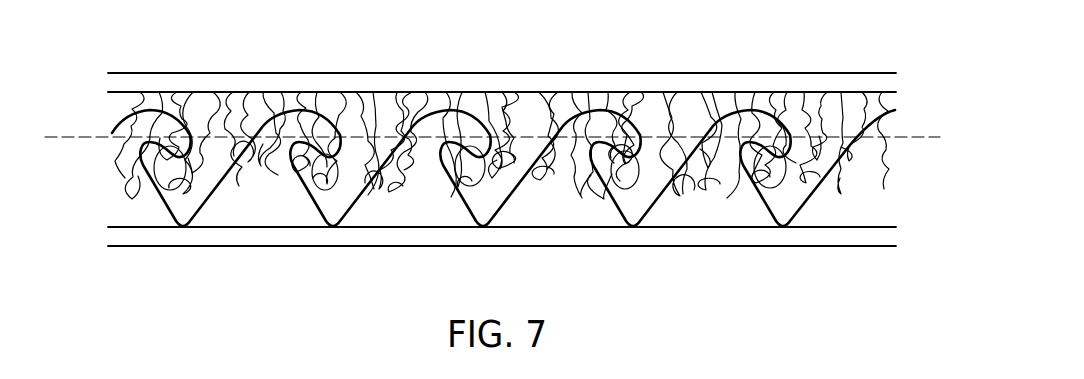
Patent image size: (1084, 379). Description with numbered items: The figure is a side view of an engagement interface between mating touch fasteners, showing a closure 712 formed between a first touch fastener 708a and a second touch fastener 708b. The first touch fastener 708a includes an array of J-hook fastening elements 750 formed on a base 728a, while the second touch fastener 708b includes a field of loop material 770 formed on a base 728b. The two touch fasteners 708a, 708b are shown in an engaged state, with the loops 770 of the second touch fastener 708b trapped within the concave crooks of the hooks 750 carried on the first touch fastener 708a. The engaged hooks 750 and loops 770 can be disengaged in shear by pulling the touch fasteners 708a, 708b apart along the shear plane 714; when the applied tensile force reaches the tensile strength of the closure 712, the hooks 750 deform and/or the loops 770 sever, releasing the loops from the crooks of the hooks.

The closure 712 is at (472, 159).
The shear plane 714 is at (918, 134).
The first touch fastener 708a is at (502, 261).
The second touch fastener 708b is at (502, 58).
The base 728a is at (637, 237).
The base 728b is at (637, 88).
The J-hook fastening elements 750 is at (183, 229).
The loop material 770 is at (213, 93).